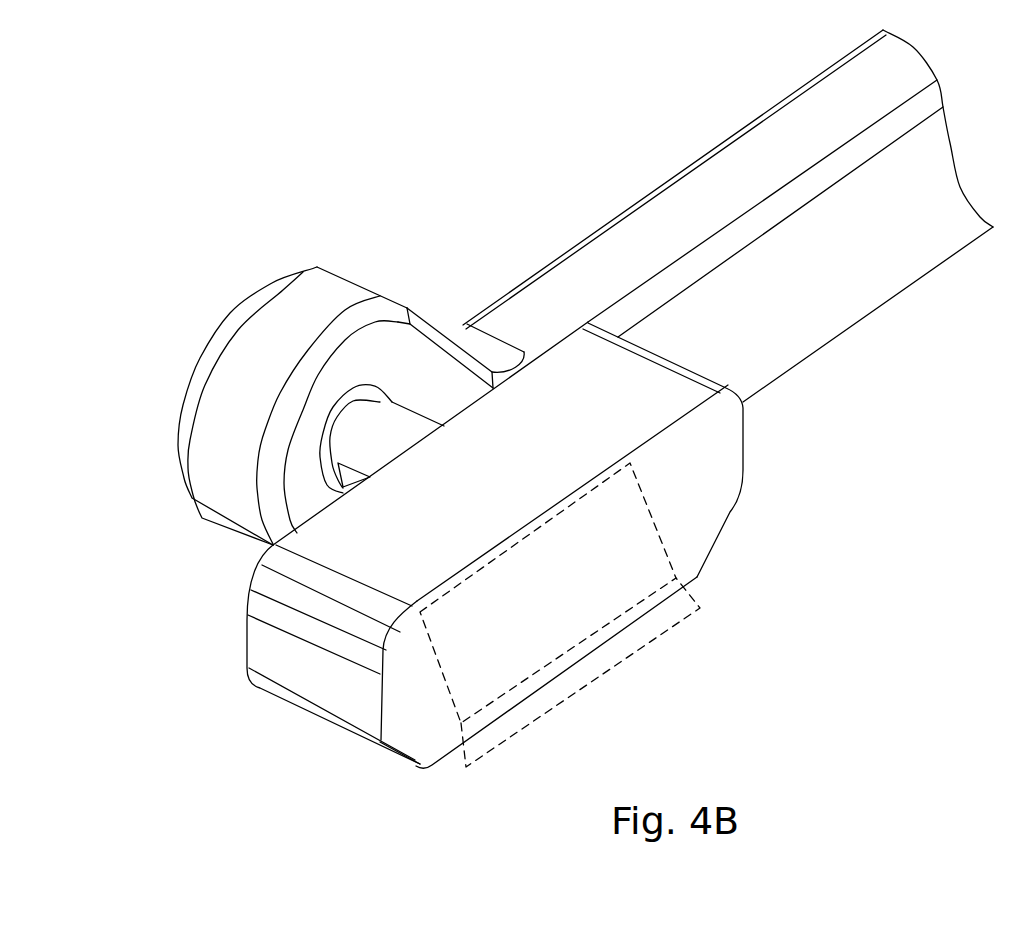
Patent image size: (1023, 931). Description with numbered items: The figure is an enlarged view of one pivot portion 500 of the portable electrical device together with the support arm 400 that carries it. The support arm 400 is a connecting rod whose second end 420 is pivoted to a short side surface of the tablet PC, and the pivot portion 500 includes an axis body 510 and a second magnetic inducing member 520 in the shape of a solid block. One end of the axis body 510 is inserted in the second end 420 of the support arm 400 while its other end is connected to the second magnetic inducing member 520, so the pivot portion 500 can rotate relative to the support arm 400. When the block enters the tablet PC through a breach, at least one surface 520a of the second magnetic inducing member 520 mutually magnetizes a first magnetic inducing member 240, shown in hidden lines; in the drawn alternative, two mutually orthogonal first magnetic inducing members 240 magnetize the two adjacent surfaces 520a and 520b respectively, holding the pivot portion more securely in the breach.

The support arm 400 is at (627, 192).
The second end 420 is at (273, 316).
The pivot portion 500 is at (432, 393).
The axis body 510 is at (368, 430).
The second magnetic inducing member 520 is at (347, 738).
The surface 520a is at (723, 495).
The surface 520b is at (435, 759).
The first magnetic inducing member 240 is at (637, 577).